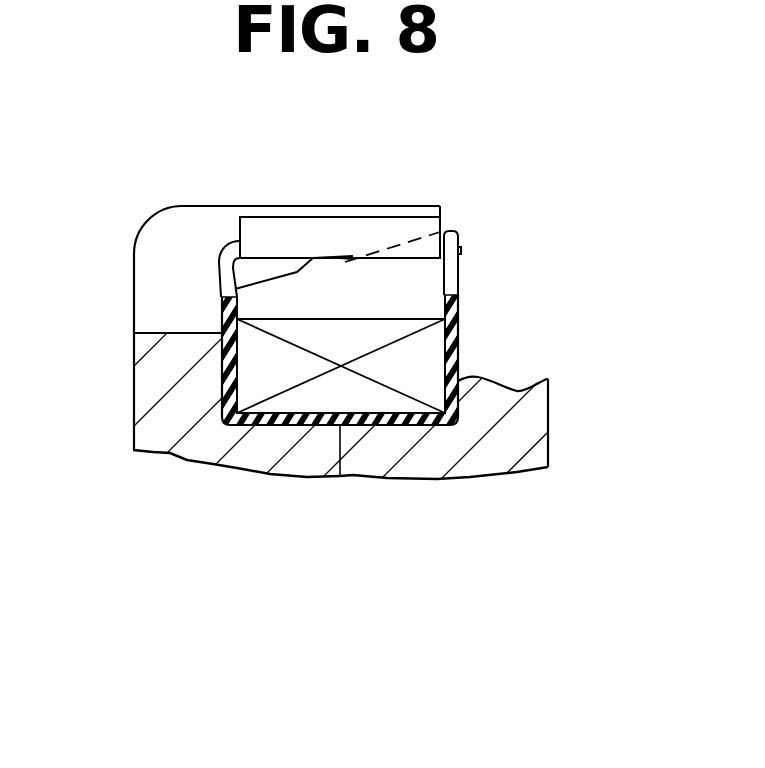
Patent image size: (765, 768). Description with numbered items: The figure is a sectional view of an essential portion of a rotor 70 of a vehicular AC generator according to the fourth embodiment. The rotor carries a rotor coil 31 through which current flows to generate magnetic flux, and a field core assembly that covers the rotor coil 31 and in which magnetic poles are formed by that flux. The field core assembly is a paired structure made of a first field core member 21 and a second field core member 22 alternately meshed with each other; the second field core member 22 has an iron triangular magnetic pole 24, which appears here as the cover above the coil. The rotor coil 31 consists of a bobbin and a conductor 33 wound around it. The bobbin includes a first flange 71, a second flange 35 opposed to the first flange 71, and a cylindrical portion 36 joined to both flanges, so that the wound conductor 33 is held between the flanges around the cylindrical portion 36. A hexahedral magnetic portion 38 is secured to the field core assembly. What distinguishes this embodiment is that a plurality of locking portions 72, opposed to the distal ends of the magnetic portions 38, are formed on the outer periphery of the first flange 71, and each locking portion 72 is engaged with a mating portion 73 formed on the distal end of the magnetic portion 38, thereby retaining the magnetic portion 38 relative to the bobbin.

The first field core member 21 is at (537, 415).
The second field core member 22 is at (133, 402).
The triangular magnetic pole 24 is at (237, 207).
The rotor coil 31 is at (358, 400).
The conductor 33 is at (254, 393).
The second flange 35 is at (222, 362).
The cylindrical portion 36 is at (293, 427).
The magnetic portion 38 is at (395, 224).
The rotor 70 is at (530, 377).
The first flange 71 is at (457, 345).
The locking portion 72 is at (460, 237).
The mating portion 73 is at (461, 250).